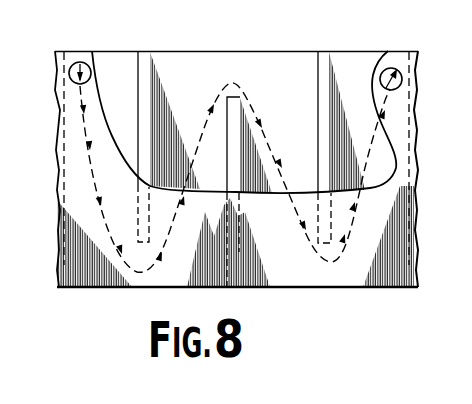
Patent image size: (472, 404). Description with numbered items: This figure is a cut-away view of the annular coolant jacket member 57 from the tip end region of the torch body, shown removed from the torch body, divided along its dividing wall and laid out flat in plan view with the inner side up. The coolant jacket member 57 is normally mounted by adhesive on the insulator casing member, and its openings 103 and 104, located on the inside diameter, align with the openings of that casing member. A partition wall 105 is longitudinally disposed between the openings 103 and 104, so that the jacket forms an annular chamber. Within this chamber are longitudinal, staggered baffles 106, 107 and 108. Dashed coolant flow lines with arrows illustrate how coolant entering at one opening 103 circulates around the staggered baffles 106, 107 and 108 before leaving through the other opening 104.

The annular coolant jacket member 57 is at (218, 51).
The opening 103 is at (81, 62).
The opening 104 is at (392, 67).
The partition wall 105 is at (61, 81).
The baffle 106 is at (142, 63).
The baffle 107 is at (239, 97).
The baffle 108 is at (324, 63).